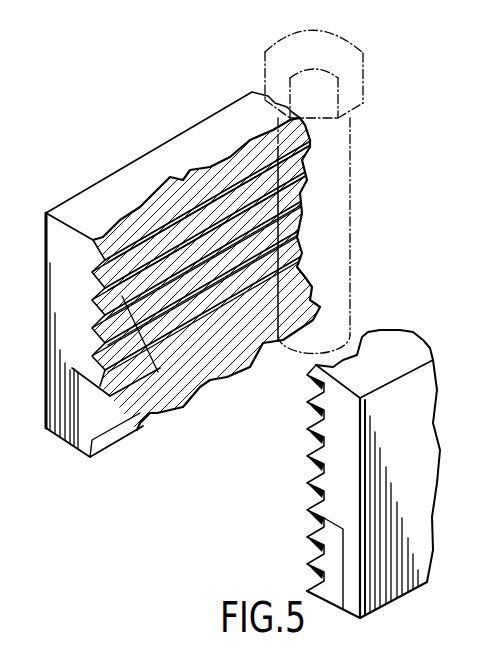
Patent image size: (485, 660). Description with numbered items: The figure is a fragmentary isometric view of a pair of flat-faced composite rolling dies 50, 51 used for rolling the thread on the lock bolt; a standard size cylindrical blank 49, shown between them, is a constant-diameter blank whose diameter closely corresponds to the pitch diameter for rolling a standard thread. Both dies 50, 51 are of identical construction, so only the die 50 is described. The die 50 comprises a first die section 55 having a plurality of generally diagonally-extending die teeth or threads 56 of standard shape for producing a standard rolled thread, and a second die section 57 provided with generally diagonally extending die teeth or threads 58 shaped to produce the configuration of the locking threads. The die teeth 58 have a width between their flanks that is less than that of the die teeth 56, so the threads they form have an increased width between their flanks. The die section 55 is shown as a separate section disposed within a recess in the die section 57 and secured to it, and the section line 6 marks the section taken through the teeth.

The cylindrical blank 49 is at (333, 157).
The rolling die 50 is at (242, 289).
The rolling die 51 is at (425, 340).
The first die section 55 is at (82, 446).
The die teeth 56 is at (133, 412).
The second die section 57 is at (62, 302).
The die teeth 58 is at (200, 224).
The section line 6- 6 is at (122, 296).